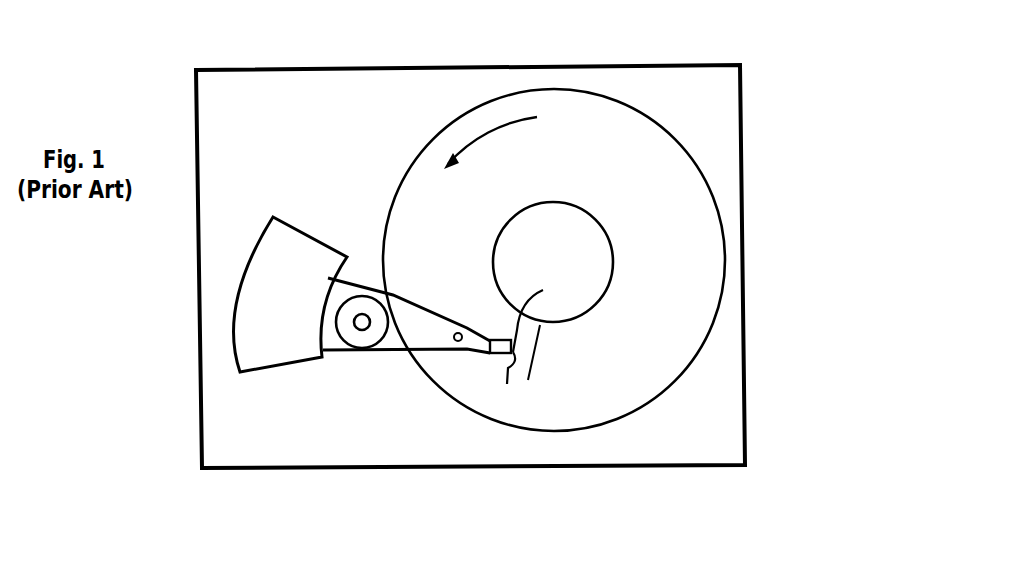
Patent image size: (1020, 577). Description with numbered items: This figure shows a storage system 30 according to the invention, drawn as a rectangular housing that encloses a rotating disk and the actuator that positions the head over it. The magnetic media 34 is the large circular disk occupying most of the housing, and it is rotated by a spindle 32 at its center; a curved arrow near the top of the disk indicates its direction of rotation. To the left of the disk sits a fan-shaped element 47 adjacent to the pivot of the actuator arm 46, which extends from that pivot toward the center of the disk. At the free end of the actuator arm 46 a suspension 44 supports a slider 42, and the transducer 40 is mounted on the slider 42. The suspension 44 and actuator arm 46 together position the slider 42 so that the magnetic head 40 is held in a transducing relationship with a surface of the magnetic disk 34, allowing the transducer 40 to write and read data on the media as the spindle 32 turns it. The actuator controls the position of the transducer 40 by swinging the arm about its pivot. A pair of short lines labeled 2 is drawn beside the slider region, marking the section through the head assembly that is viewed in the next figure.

The storage system 30 is at (752, 71).
The spindle 32 is at (573, 201).
The magnetic media 34 is at (663, 264).
The transducer 40 is at (506, 381).
The slider 42 is at (539, 311).
The suspension 44 is at (477, 352).
The actuator arm 46 is at (400, 298).
The voice coil motor magnet 47 is at (305, 230).
The section line 2- 2 is at (550, 339).